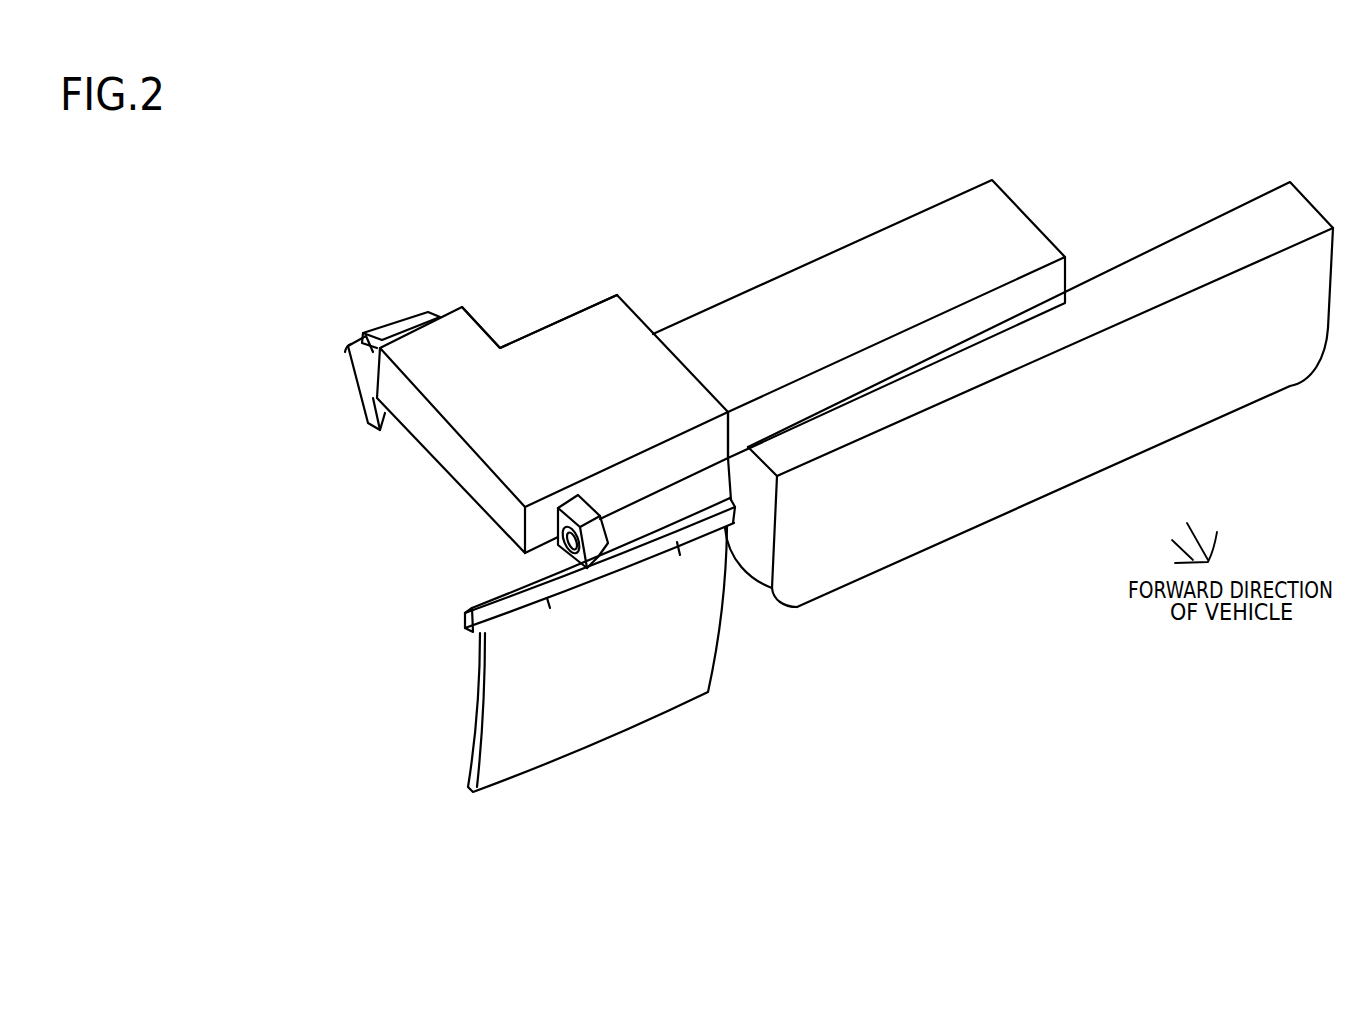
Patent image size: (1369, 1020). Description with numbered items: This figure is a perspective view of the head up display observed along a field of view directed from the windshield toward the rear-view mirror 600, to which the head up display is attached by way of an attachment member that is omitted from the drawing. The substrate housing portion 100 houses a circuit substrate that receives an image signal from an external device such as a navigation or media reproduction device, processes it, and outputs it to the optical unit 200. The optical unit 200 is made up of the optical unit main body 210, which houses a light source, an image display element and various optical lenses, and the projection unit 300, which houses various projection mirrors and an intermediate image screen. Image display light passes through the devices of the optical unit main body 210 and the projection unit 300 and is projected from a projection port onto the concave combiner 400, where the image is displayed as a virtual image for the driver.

The substrate housing portion 100 is at (875, 256).
The optical unit 200 is at (501, 256).
The optical unit main body 210 is at (565, 339).
The projection unit 300 is at (358, 367).
The combiner 400 is at (613, 720).
The rear-view mirror 600 is at (1205, 407).